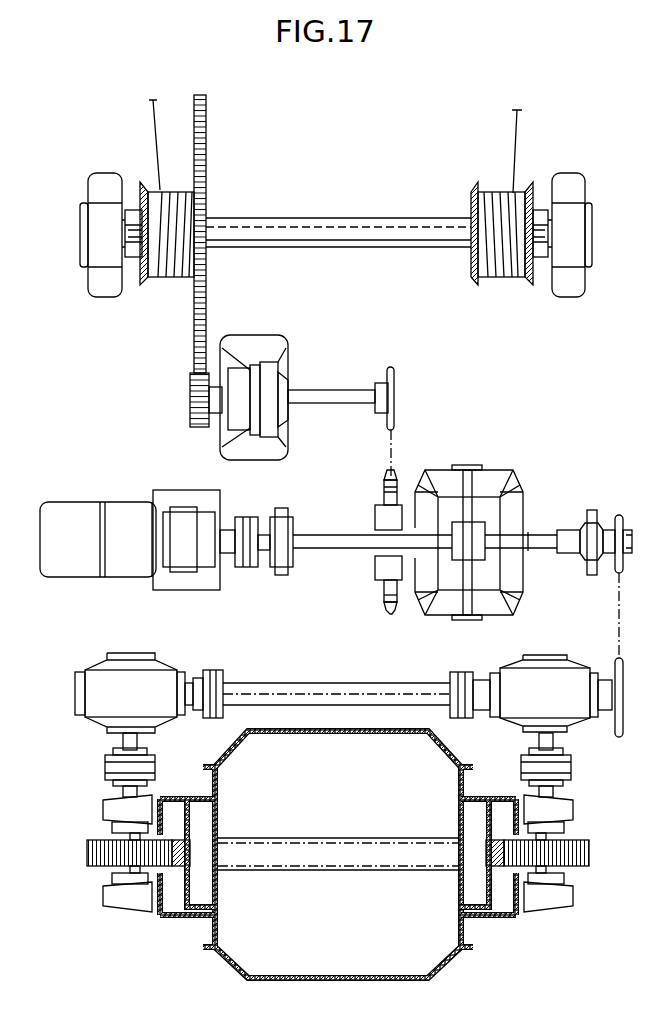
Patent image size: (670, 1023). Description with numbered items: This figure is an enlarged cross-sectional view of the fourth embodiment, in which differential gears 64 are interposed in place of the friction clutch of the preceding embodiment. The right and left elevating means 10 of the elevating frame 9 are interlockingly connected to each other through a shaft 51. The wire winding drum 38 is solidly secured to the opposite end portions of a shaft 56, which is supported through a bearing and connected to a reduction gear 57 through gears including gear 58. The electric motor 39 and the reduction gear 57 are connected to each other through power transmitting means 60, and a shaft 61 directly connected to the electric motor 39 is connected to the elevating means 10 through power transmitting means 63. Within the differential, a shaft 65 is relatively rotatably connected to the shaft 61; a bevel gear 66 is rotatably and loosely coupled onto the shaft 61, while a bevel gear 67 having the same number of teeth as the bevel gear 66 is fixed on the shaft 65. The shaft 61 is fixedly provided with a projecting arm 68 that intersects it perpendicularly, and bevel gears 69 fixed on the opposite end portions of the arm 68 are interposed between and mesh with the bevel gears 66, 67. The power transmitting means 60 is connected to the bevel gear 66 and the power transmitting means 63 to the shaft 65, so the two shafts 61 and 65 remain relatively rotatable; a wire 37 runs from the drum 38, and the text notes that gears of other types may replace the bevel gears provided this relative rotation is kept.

The elevating frame 9 is at (174, 905).
The elevating means 10 is at (557, 742).
The rope 37 is at (518, 127).
The wire winding drum 38 is at (500, 192).
The electric motor 39 is at (130, 514).
The shaft 51 is at (344, 692).
The shaft 56 is at (341, 228).
The reduction gear 57 is at (262, 340).
The gear 58 is at (206, 118).
The power transmitting means 60 is at (386, 444).
The shaft 61 is at (338, 545).
The power transmitting means 63 is at (618, 600).
The differential gears 64 is at (496, 478).
The shaft 65 is at (566, 532).
The bevel gear 66 is at (414, 492).
The bevel gear 67 is at (518, 500).
The arm 68 is at (466, 578).
The bevel gears 69 is at (447, 482).